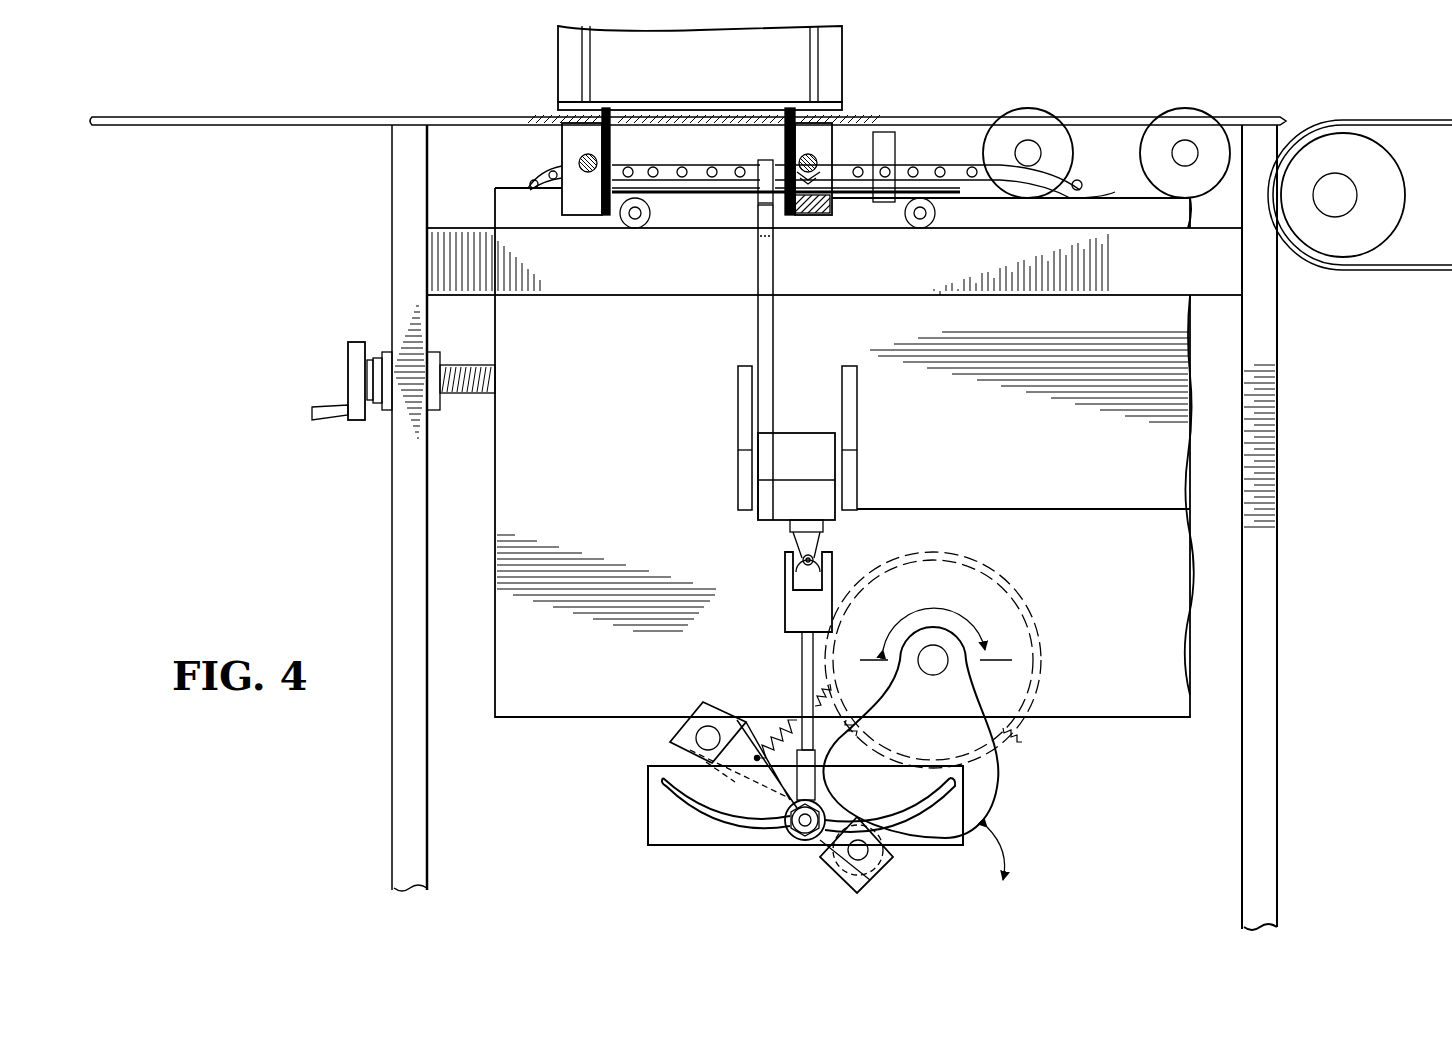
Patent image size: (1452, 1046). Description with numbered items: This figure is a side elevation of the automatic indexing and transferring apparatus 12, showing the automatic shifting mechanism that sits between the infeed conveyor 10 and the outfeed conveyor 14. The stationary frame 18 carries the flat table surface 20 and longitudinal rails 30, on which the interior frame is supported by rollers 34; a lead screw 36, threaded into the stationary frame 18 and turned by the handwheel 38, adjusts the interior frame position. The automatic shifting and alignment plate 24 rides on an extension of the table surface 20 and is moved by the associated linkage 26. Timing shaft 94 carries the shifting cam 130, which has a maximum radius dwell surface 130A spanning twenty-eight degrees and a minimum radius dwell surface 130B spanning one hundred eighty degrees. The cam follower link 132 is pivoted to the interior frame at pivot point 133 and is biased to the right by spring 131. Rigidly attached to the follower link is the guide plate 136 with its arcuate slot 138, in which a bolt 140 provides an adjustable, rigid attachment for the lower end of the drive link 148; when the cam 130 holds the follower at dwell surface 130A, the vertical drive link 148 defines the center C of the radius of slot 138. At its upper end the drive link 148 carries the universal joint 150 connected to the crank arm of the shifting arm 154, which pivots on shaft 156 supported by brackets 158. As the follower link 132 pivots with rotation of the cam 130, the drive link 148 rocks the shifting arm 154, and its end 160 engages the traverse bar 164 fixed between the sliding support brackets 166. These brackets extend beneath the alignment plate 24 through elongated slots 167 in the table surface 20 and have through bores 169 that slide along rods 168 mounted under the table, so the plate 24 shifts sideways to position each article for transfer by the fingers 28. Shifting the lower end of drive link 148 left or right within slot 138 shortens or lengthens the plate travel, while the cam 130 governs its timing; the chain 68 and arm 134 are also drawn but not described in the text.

The infeed conveyor 10 is at (1337, 292).
The indexing and transferring apparatus 12 is at (582, 434).
The outfeed conveyor 14 is at (284, 104).
The stationary frame 18 is at (1263, 544).
The table surface 20 is at (470, 116).
The automatic shifting and alignment plate 24 is at (838, 62).
The linkage 26 is at (1012, 758).
The fingers 28 is at (896, 146).
The longitudinal rails 30 is at (636, 290).
The rollers 34 is at (651, 215).
The lead screw 36 is at (468, 395).
The handwheel 38 is at (348, 375).
The chain 68 is at (683, 166).
The timing shaft 94 is at (930, 676).
The shifting cam 130 is at (952, 745).
The maximum radius dwell surface 130A is at (1000, 882).
The minimum radius dwell surface 130B is at (928, 625).
The spring 131 is at (775, 735).
The cam follower link 132 is at (806, 866).
The pivot point 133 is at (700, 725).
The right arm 134 is at (880, 836).
The guide plate 136 is at (648, 824).
The arcuate slot 138 is at (680, 795).
The bolt 140 is at (795, 838).
The drive link 148 is at (803, 656).
The universal joint 150 is at (785, 578).
The shifting arm 154 is at (775, 322).
The shaft 156 is at (845, 475).
The brackets 158 is at (738, 400).
The end of shifting arm 160 is at (757, 166).
The traverse bar 164 is at (702, 193).
The sliding support brackets 166 is at (563, 138).
The elongated slots 167 is at (620, 116).
The rods 168 is at (580, 164).
The through bores 169 is at (596, 160).
The center of the radius of arcuate slot C is at (823, 556).